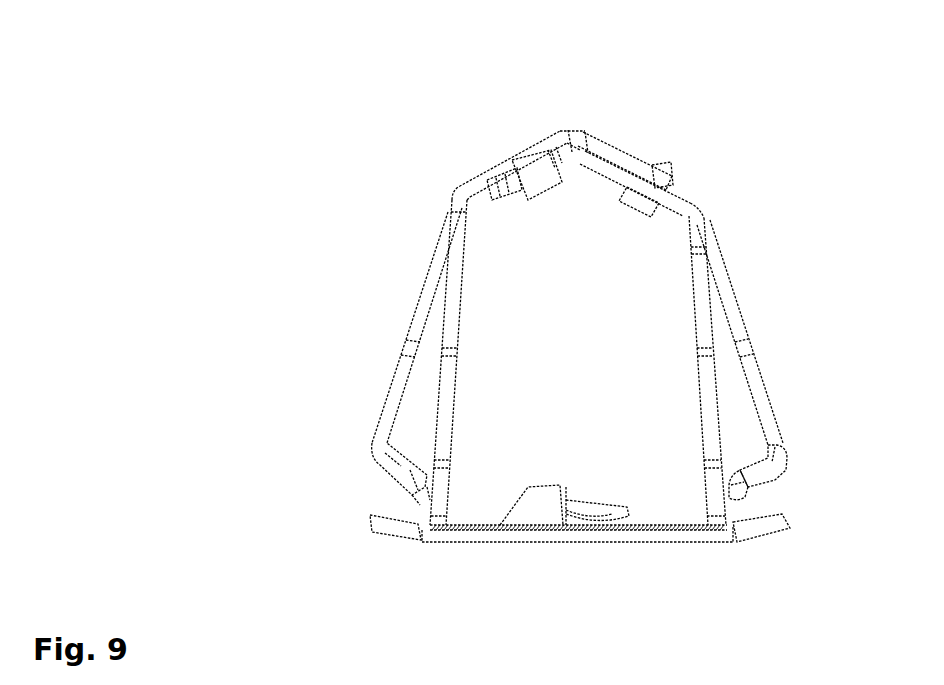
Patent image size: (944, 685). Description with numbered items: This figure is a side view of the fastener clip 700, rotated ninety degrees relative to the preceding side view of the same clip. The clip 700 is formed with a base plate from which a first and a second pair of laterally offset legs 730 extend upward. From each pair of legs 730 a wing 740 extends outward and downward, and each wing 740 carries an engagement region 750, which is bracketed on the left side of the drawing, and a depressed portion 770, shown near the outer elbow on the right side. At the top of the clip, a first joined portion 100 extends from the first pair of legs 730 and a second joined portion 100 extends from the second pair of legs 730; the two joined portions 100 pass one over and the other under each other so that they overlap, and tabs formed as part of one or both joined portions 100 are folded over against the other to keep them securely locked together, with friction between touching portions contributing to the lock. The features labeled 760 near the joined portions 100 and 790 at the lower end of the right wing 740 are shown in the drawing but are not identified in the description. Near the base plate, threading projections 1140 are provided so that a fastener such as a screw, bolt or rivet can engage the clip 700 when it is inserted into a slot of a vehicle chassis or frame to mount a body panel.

The fastener clip 700 is at (264, 92).
The joined portion 100 is at (551, 145).
The mounting tab 760 is at (537, 180).
The laterally offset legs 730 is at (705, 325).
The wing 740 is at (758, 390).
The depressed portion 770 is at (780, 463).
The end tab 790 is at (740, 503).
The engagement region 750 is at (345, 489).
The threading projections 1140 is at (537, 510).